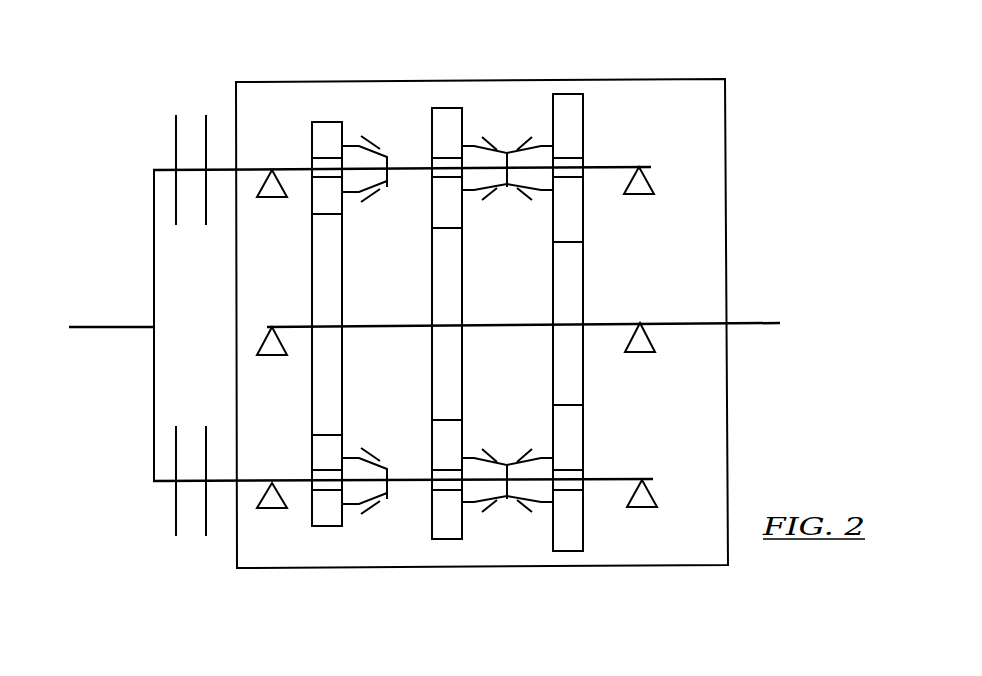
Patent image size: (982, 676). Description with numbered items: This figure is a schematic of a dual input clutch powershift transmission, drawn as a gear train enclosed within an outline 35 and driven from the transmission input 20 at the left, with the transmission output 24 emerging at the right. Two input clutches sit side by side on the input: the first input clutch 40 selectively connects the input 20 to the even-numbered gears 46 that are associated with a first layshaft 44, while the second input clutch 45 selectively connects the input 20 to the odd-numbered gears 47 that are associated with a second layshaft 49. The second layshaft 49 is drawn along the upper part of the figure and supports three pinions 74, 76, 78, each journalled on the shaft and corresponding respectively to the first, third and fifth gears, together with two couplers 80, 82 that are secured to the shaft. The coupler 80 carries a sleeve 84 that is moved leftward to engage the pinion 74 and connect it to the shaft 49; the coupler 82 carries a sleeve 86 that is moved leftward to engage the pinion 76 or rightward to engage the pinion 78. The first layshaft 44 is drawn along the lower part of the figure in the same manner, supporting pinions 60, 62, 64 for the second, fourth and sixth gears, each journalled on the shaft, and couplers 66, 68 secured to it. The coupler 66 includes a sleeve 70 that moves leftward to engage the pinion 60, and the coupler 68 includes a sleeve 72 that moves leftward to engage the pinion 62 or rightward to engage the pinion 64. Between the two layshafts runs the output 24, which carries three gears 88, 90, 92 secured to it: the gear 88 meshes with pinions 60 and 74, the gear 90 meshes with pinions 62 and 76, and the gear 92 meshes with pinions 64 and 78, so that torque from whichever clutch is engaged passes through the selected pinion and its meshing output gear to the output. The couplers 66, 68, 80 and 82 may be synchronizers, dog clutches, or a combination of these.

The transmission input 20 is at (133, 325).
The transmission output 24 is at (762, 322).
The transmission housing 35 is at (470, 80).
The first input clutch 40 is at (177, 505).
The first layshaft 44 is at (227, 482).
The second input clutch 45 is at (176, 147).
The even-numbered gears 46 is at (389, 533).
The odd-numbered gears 47 is at (373, 110).
The second layshaft 49 is at (225, 168).
The pinion 60 is at (312, 455).
The pinion 62 is at (434, 455).
The pinion 64 is at (586, 440).
The coupler 66 is at (390, 487).
The coupler 68 is at (510, 488).
The sleeve 70 is at (384, 455).
The sleeve 72 is at (498, 450).
The pinion 74 is at (328, 122).
The pinion 76 is at (450, 108).
The pinion 78 is at (567, 93).
The coupler 80 is at (388, 158).
The coupler 82 is at (508, 178).
The sleeve 84 is at (373, 193).
The sleeve 86 is at (495, 142).
The gear 88 is at (342, 362).
The gear 90 is at (463, 360).
The gear 92 is at (585, 362).